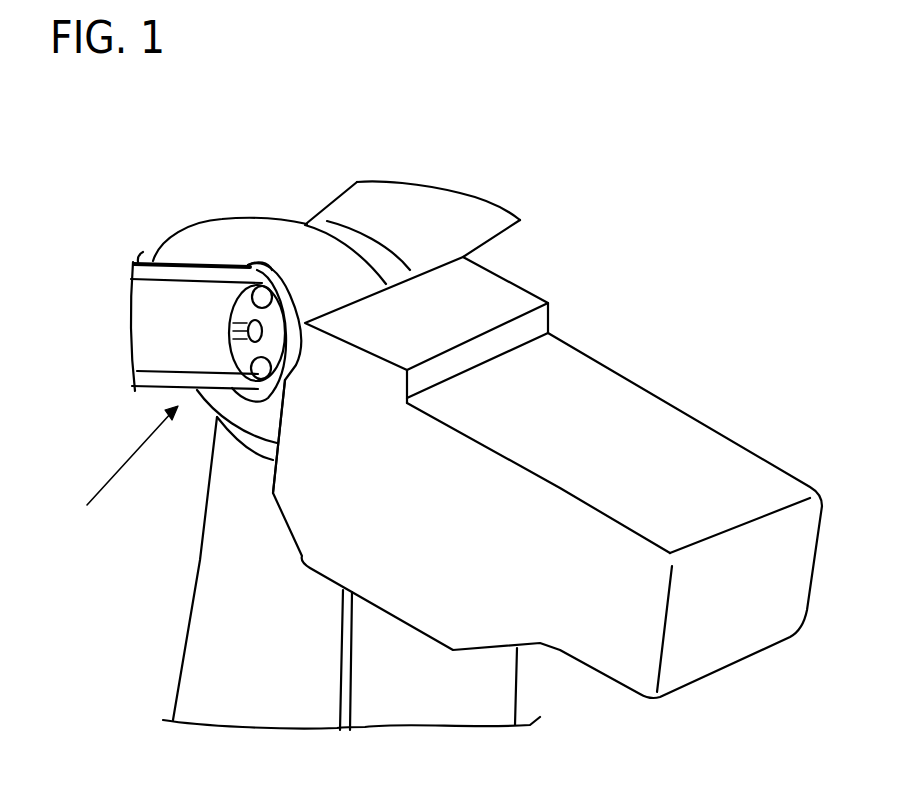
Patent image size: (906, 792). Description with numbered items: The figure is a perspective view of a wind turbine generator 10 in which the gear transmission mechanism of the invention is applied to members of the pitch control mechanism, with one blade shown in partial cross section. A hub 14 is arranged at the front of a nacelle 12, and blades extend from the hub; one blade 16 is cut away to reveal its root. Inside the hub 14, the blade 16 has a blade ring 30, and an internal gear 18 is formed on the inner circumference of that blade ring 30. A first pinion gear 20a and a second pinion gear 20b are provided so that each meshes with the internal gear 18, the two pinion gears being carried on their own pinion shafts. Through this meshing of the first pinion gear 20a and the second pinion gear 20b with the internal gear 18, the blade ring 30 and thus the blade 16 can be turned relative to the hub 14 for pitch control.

The wind turbine generator 10 is at (620, 305).
The nacelle 12 is at (602, 390).
The hub 14 is at (223, 218).
The blade 16 is at (458, 237).
The internal gear 18 is at (230, 332).
The first pinion gear 20a is at (281, 280).
The second pinion gear 20b is at (287, 378).
The blade ring 30 is at (266, 262).